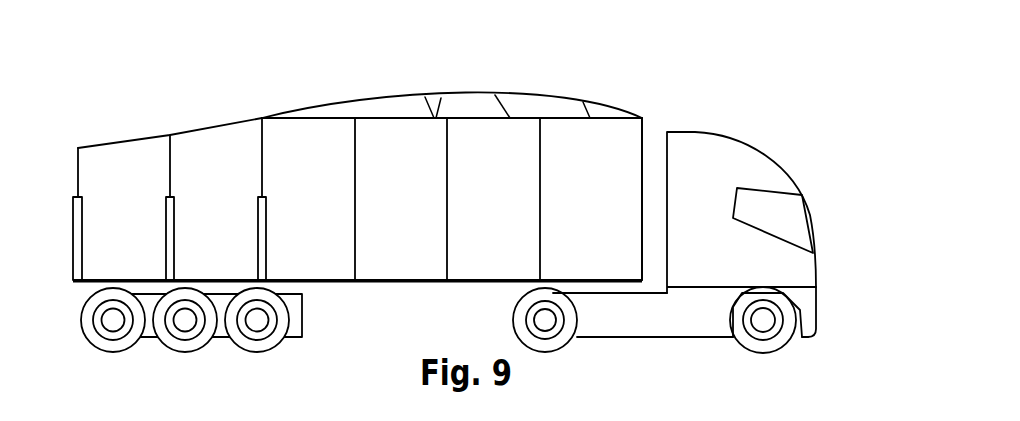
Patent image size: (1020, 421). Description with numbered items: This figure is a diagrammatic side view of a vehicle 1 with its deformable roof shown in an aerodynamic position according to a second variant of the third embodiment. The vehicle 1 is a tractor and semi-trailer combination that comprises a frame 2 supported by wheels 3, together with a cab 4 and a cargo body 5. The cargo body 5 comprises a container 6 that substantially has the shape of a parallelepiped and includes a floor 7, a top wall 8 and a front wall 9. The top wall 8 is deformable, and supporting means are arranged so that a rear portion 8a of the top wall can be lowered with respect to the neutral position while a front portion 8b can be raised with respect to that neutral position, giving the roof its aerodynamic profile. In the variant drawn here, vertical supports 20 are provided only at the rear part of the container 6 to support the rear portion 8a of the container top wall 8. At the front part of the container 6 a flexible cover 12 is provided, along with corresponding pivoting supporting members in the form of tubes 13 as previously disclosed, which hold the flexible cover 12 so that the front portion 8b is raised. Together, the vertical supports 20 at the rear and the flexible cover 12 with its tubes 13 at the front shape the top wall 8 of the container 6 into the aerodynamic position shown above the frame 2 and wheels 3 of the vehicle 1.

The vehicle 1 is at (753, 92).
The frame 2 is at (638, 320).
The wheels 3 is at (757, 345).
The cab 4 is at (760, 175).
The cargo body 5 is at (613, 80).
The container 6 is at (65, 228).
The floor 7 is at (88, 281).
The top wall 8 is at (382, 92).
The rear portion of the top wall 8a is at (153, 133).
The front portion of the top wall 8b is at (520, 118).
The front wall 9 is at (644, 135).
The flexible cover 12 is at (470, 92).
The tubes 13 is at (440, 98).
The vertical supports 20 is at (262, 157).